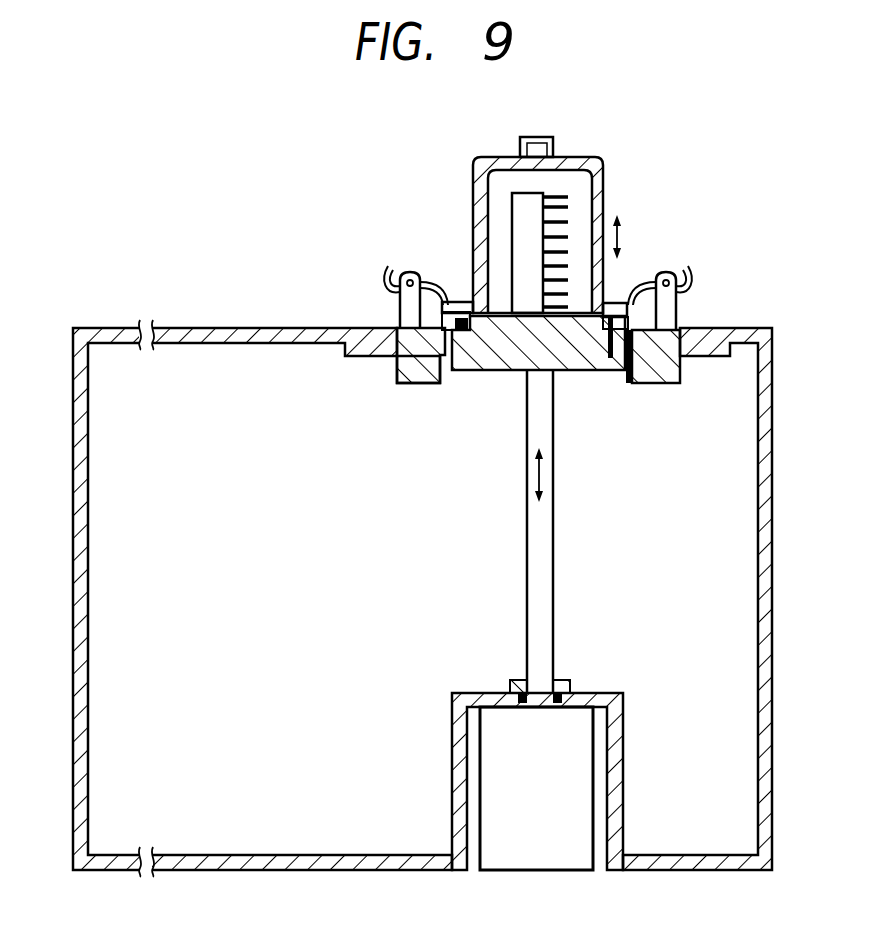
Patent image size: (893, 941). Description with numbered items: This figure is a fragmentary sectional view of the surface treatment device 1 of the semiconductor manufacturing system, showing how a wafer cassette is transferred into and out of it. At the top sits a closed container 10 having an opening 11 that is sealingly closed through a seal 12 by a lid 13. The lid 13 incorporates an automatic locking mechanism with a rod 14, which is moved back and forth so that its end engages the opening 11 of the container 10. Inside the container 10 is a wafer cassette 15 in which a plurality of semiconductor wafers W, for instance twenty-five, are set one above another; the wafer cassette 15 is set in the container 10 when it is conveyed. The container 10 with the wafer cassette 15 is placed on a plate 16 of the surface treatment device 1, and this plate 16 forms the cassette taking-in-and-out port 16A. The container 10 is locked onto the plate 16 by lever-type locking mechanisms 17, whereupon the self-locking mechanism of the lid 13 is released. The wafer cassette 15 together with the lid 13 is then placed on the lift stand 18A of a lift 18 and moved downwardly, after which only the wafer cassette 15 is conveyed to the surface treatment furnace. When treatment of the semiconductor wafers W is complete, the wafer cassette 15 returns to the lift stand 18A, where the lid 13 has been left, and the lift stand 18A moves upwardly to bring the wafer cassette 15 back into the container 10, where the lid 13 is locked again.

The surface treatment device 1 is at (68, 581).
The closed container 10 is at (494, 156).
The opening 11 is at (610, 287).
The seal 12 is at (473, 300).
The lid 13 is at (500, 333).
The rod 14 is at (637, 384).
The wafer cassette 15 is at (520, 206).
The plate 16 is at (403, 335).
The cassette taking-in-and-out port 16A is at (432, 347).
The lever-type locking mechanism 17 is at (388, 270).
The lift 18 is at (530, 857).
The lift stand 18A is at (573, 366).
The semiconductor wafer W is at (568, 205).